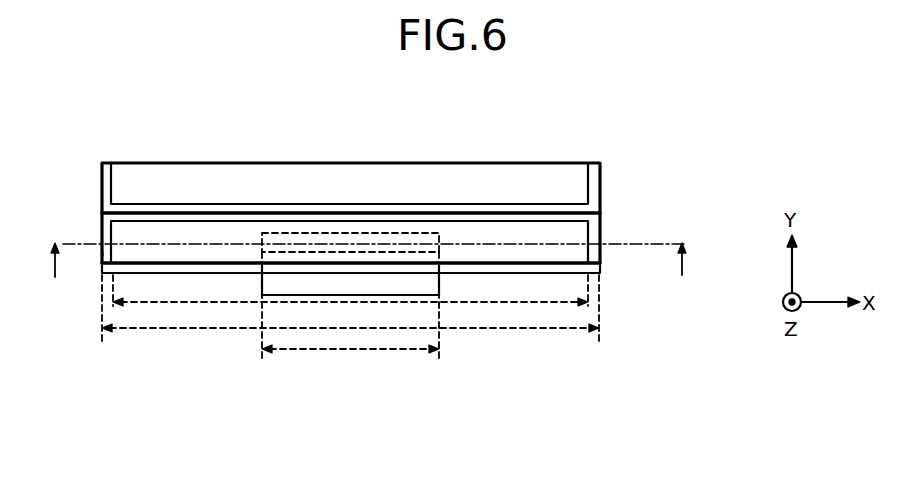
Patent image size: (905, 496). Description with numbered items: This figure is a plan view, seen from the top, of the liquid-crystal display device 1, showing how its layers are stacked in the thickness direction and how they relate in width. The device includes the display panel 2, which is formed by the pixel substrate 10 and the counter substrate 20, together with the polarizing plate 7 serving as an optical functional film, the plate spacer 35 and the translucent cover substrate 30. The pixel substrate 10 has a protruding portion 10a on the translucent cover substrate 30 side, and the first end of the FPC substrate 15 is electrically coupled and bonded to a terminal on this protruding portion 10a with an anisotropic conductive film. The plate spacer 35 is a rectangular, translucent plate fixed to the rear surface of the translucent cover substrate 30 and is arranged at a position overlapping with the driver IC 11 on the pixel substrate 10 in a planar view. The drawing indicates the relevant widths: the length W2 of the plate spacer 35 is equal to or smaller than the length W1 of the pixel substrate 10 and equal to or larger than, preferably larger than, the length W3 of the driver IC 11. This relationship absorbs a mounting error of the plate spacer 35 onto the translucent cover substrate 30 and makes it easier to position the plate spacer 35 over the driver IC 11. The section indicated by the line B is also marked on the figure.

The liquid-crystal display device 1 is at (61, 146).
The display panel 2 is at (655, 278).
The polarizing plate 7 is at (580, 175).
The pixel substrate 10 is at (593, 255).
The protruding portion 10a is at (100, 258).
The driver IC 11 is at (395, 240).
The FPC substrate 15 is at (307, 287).
The counter substrate 20 is at (597, 205).
The translucent cover substrate 30 is at (570, 268).
The plate spacer 35 is at (120, 230).
The length in the width direction of the pixel substrate W1 is at (558, 331).
The length in the width direction of the plate spacer W2 is at (502, 304).
The length in the width direction of the driver IC W3 is at (375, 355).
The section line B is at (369, 275).